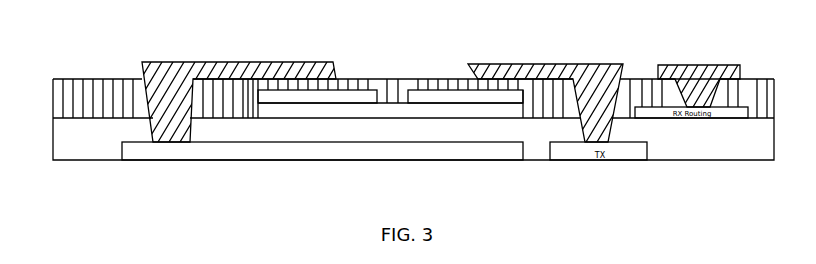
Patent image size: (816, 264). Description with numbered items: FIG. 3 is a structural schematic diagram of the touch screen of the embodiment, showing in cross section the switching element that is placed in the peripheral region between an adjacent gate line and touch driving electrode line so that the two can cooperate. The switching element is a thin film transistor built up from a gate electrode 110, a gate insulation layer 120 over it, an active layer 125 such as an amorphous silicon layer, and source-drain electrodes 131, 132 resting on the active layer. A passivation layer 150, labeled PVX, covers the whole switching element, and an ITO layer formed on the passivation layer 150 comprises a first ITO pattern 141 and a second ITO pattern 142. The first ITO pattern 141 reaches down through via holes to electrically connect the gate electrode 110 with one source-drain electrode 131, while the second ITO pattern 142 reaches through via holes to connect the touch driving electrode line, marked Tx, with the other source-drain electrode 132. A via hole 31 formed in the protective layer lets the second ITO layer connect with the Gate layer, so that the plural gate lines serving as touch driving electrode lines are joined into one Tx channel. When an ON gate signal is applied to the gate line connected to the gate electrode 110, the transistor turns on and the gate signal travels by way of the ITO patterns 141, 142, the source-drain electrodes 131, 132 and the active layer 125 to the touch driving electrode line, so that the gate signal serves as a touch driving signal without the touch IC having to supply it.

The via hole 31 is at (147, 113).
The gate electrode 110 is at (290, 148).
The gate insulation layer 120 is at (500, 126).
The active layer 125 is at (418, 112).
The source-drain electrode 131 is at (352, 95).
The source-drain electrode 132 is at (443, 88).
The first ITO pattern 141 is at (142, 64).
The second ITO pattern 142 is at (500, 66).
The passivation layer 150 is at (83, 93).